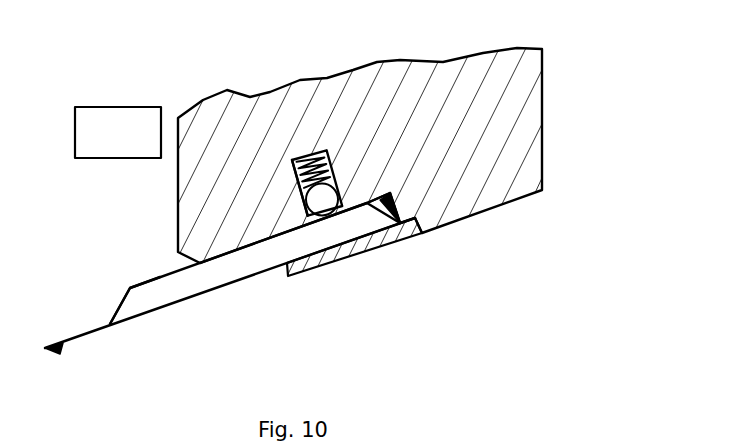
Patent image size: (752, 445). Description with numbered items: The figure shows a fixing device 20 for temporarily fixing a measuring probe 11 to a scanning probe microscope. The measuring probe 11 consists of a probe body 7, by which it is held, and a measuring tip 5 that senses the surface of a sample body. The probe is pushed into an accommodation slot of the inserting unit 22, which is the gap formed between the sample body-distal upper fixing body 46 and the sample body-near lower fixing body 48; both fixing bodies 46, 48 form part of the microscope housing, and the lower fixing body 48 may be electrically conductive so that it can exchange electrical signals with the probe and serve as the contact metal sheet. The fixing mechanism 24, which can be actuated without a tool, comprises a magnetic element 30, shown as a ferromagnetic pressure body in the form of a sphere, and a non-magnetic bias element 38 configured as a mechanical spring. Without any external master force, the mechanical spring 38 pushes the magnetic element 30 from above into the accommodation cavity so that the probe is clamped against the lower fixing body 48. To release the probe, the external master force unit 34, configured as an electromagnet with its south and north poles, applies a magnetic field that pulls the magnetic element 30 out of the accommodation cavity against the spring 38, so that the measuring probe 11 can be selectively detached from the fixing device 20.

The measuring tip 5 is at (62, 352).
The probe body 7 is at (143, 298).
The measuring probe 11 is at (116, 290).
The fixing device 20 is at (556, 70).
The inserting unit 22 is at (261, 229).
The fixing mechanism 24 is at (305, 157).
The magnetic element 30 is at (343, 208).
The master force unit 34 is at (116, 107).
The non-magnetic bias element 38 is at (293, 164).
The upper fixing body 46 is at (525, 165).
The lower fixing body 48 is at (378, 242).